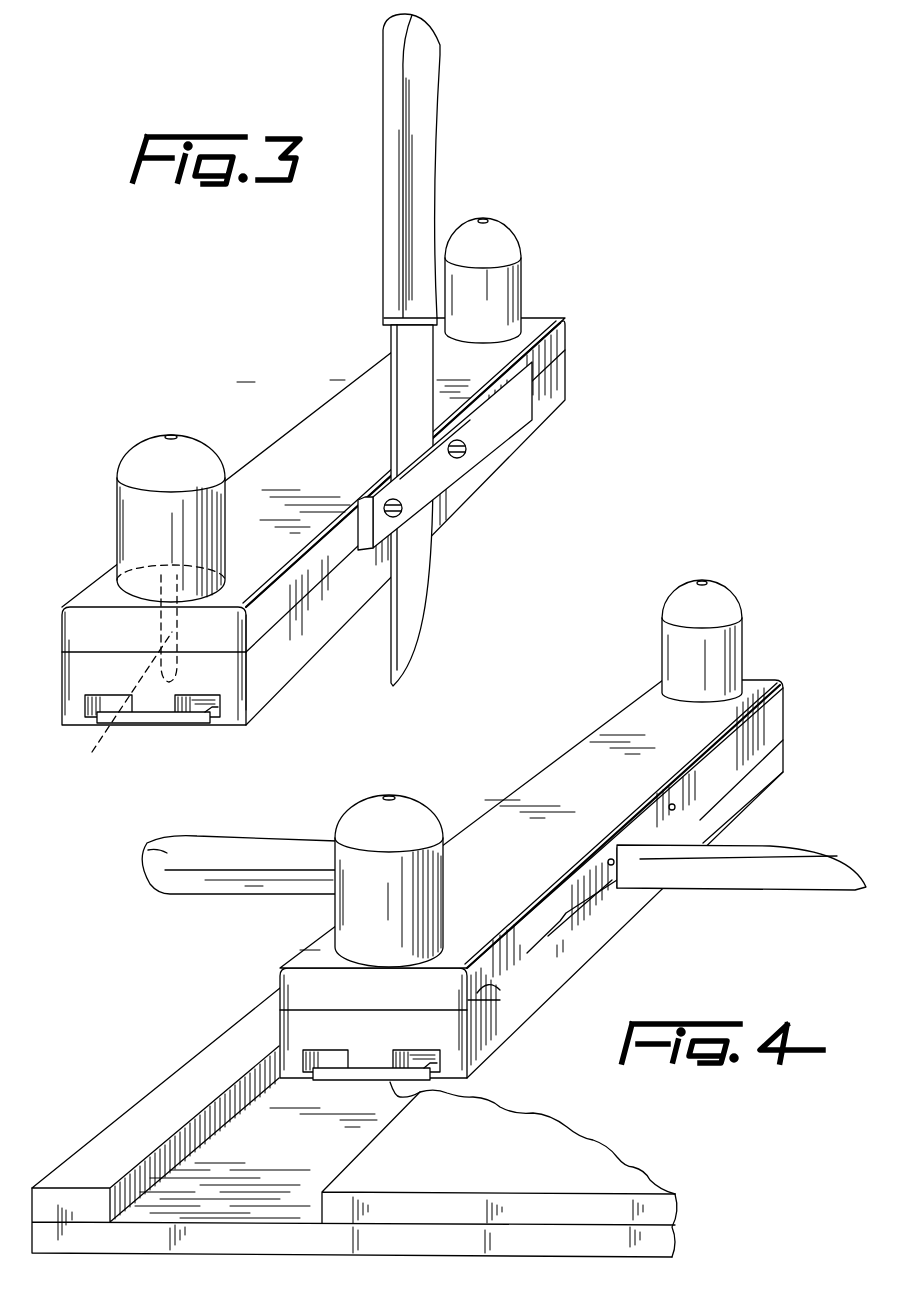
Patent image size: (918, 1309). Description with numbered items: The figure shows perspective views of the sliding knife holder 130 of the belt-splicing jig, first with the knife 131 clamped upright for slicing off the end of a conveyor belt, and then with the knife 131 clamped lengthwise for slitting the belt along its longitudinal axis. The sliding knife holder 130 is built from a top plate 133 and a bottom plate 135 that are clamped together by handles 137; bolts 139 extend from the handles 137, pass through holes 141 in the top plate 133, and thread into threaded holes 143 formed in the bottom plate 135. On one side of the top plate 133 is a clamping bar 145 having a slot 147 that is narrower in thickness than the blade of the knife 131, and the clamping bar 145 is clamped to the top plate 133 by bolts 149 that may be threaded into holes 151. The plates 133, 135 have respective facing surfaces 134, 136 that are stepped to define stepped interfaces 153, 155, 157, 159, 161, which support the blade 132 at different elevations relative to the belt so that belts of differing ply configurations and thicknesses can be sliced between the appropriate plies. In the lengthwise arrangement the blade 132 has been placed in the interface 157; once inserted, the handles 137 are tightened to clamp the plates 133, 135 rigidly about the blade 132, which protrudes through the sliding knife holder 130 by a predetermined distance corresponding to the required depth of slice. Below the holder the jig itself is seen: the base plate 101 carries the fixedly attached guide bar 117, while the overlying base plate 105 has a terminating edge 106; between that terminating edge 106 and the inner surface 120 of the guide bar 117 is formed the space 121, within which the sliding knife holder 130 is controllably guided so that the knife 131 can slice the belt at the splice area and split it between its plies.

In FIG. 4, the base plate 101 is at (656, 1243).
In FIG. 4, the base plate 105 is at (524, 1152).
In FIG. 4, the terminating edge 106 is at (322, 1205).
In FIG. 4, the guide bar 117 is at (156, 1105).
In FIG. 4, the inner surface 120 is at (138, 1165).
In FIG. 4, the space 121 is at (290, 1157).
In FIG. 3, the sliding knife holder 130 is at (356, 494).
In FIG. 4, the sliding knife holder 130 is at (567, 865).
In FIG. 3, the knife 131 is at (428, 58).
In FIG. 4, the knife 131 is at (148, 842).
In FIG. 3, the blade 132 is at (420, 632).
In FIG. 4, the blade 132 is at (754, 874).
In FIG. 3, the top plate 133 is at (546, 362).
In FIG. 4, the top plate 133 is at (510, 807).
In FIG. 4, the facing surface 134 is at (482, 990).
In FIG. 3, the bottom plate 135 is at (540, 407).
In FIG. 4, the bottom plate 135 is at (529, 997).
In FIG. 4, the facing surface 136 is at (494, 1003).
In FIG. 3, the handles 137 is at (522, 268).
In FIG. 4, the handles 137 is at (741, 598).
In FIG. 3, the bolts 139 is at (185, 630).
In FIG. 3, the holes 141 is at (165, 573).
In FIG. 3, the threaded holes 143 is at (113, 707).
In FIG. 3, the clamping bar 145 is at (435, 481).
In FIG. 3, the slot 147 is at (402, 462).
In FIG. 3, the bolts 149 is at (466, 450).
In FIG. 4, the holes 151 is at (670, 802).
In FIG. 4, the stepped interface 153 is at (556, 937).
In FIG. 4, the stepped interface 155 is at (598, 902).
In FIG. 4, the stepped interface 157 is at (636, 860).
In FIG. 4, the stepped interface 159 is at (655, 840).
In FIG. 4, the stepped interface 161 is at (749, 794).